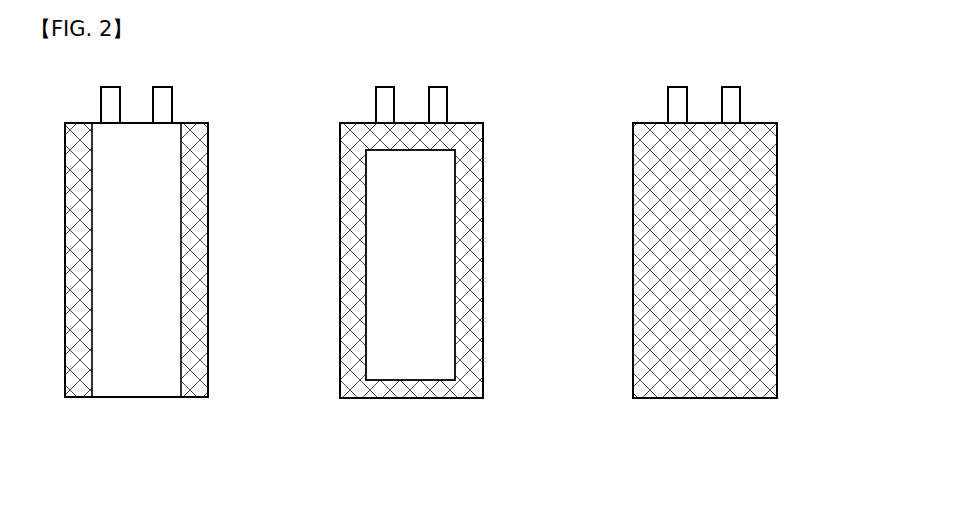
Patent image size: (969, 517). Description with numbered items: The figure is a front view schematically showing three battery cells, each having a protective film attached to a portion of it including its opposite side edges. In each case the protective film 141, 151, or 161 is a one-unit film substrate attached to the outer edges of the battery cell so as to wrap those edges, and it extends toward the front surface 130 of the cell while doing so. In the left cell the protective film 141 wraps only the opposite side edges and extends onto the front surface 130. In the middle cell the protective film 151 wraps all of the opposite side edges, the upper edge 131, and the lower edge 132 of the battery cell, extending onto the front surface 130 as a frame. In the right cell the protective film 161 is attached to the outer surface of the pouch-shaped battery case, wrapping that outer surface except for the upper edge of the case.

The front surface 130 is at (150, 360).
The upper edge 131 is at (465, 122).
The lower edge 132 is at (387, 399).
The protective film 141 is at (207, 395).
The protective film 151 is at (478, 399).
The protective film 161 is at (768, 399).